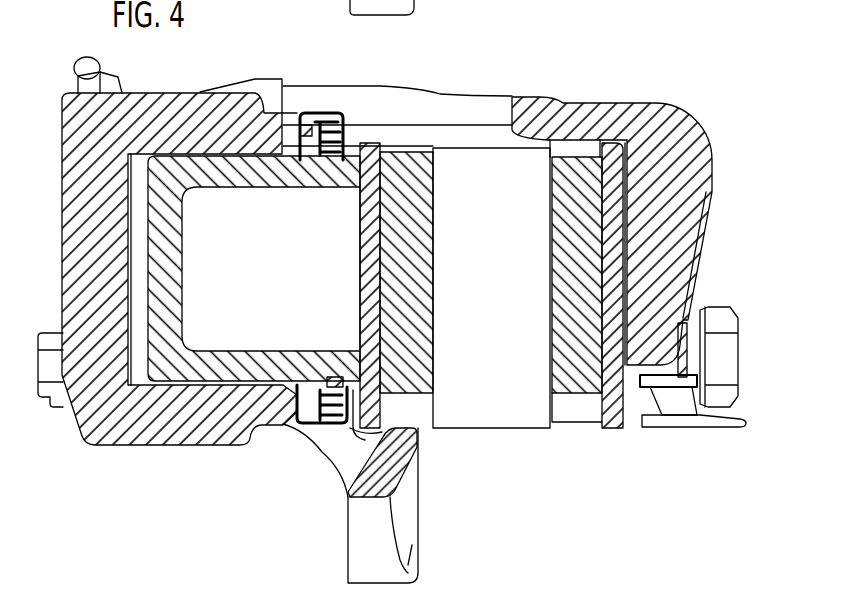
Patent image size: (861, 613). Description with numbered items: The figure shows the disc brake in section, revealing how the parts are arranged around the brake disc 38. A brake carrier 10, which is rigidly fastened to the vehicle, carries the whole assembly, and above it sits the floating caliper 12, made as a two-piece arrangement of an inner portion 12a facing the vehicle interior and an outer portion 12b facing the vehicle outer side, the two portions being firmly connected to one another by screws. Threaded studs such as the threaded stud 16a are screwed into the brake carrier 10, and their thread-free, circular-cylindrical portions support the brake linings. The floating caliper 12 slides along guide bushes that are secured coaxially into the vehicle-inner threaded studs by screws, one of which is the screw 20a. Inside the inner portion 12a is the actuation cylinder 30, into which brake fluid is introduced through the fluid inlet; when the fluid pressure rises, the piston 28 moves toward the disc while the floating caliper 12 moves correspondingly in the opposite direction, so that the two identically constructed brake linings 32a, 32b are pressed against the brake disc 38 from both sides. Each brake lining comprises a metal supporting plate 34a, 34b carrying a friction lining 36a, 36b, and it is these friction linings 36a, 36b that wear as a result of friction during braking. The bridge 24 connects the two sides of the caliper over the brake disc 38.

The brake carrier 10 is at (363, 538).
The floating caliper 12 is at (377, 240).
The inner portion 12a is at (90, 186).
The outer portion 12b is at (662, 122).
The threaded stud 16a is at (715, 377).
The screw 20a is at (43, 397).
The bridge 24 is at (460, 117).
The piston 28 is at (183, 364).
The actuation cylinder 30 is at (145, 390).
The brake lining 32a is at (350, 229).
The brake lining 32b is at (637, 212).
The supporting plate 34a is at (368, 347).
The supporting plate 34b is at (613, 350).
The friction lining 36a is at (413, 298).
The friction lining 36b is at (573, 350).
The brake disc 38 is at (503, 400).